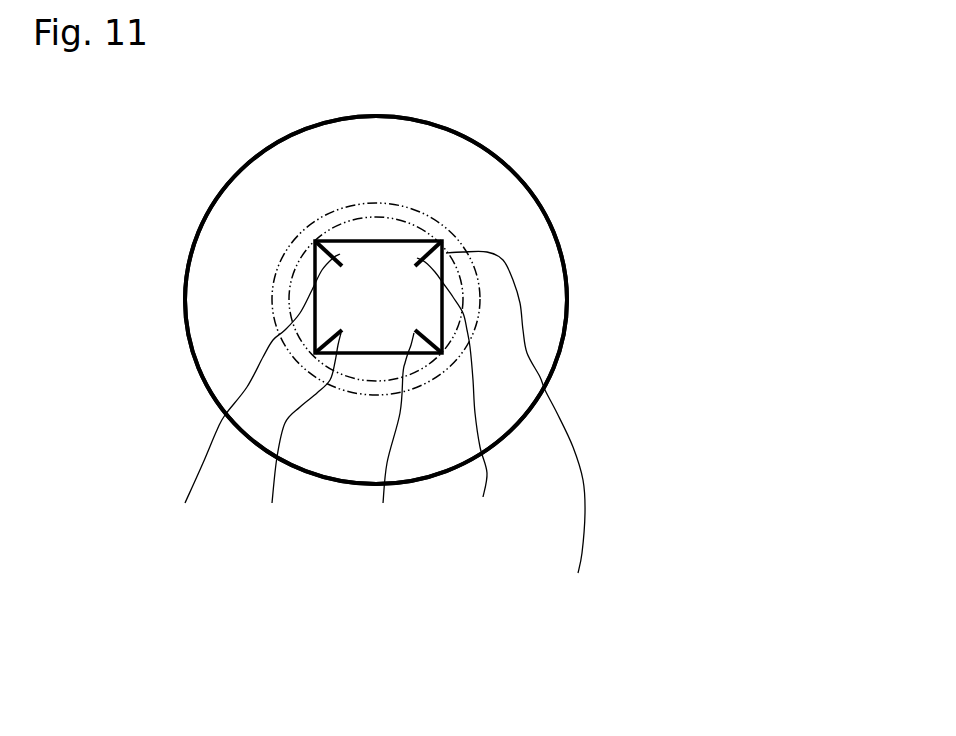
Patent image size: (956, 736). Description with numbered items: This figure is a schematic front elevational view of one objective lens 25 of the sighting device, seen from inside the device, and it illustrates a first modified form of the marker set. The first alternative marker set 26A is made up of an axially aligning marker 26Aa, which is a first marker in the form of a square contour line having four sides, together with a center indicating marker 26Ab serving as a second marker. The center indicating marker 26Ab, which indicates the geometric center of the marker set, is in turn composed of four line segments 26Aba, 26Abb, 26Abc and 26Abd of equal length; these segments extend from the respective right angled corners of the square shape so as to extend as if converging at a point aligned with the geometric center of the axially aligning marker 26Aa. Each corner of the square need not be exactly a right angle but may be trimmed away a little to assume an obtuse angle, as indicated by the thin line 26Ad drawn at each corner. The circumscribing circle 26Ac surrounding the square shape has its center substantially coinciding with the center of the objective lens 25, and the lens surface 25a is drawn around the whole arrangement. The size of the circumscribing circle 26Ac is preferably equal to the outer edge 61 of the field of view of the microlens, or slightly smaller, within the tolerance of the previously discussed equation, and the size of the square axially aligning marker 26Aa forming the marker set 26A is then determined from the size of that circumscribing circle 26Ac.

The objective lens 25 is at (555, 320).
The inner surface of pipe 25a is at (518, 217).
The outer edge of the field of view 61 is at (418, 207).
The first alternative marker set 26A is at (364, 468).
The axially aligning marker 26Aa is at (544, 435).
The center indicating marker 26Ab is at (320, 436).
The line segment 26Aba is at (215, 394).
The line segment 26Abb is at (275, 438).
The line segment 26Abc is at (482, 400).
The line segment 26Abd is at (387, 440).
The circumscribing circle 26Ac is at (290, 292).
The thin line 26Ad is at (313, 255).